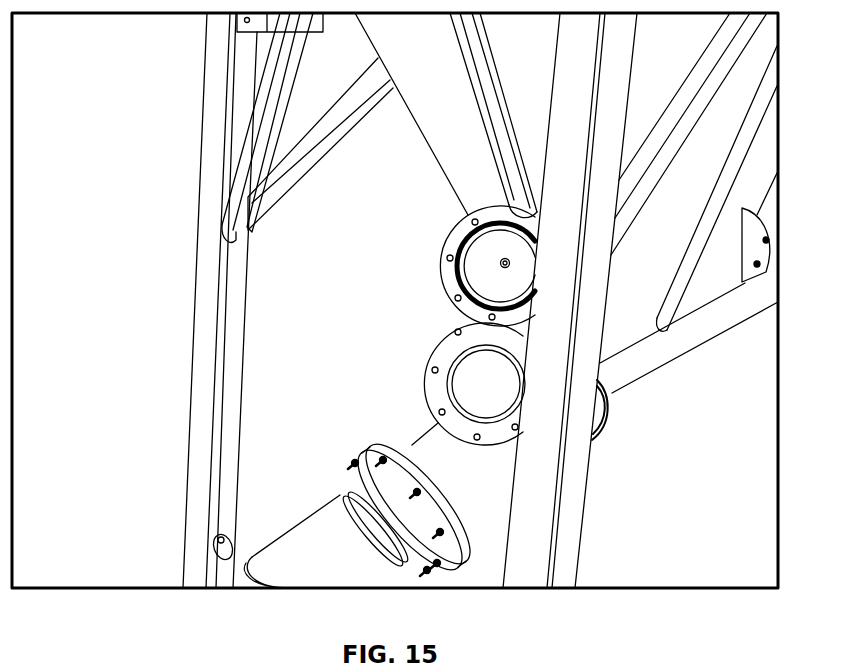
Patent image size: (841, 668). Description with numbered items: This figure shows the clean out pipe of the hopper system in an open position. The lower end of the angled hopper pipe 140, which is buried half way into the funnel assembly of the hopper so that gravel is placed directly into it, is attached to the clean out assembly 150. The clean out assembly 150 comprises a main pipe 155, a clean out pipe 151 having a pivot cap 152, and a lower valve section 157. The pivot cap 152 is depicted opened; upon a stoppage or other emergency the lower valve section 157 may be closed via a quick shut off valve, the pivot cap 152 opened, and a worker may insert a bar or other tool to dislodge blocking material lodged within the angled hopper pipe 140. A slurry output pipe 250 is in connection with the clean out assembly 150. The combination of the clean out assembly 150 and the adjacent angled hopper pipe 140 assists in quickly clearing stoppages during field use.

The angled hopper pipe 140 is at (640, 343).
The clean out assembly 150 is at (350, 274).
The clean out pipe 151 is at (508, 390).
The pivot cap 152 is at (447, 243).
The main pipe 155 is at (430, 441).
The lower valve section 157 is at (383, 446).
The slurry output pipe 250 is at (213, 573).